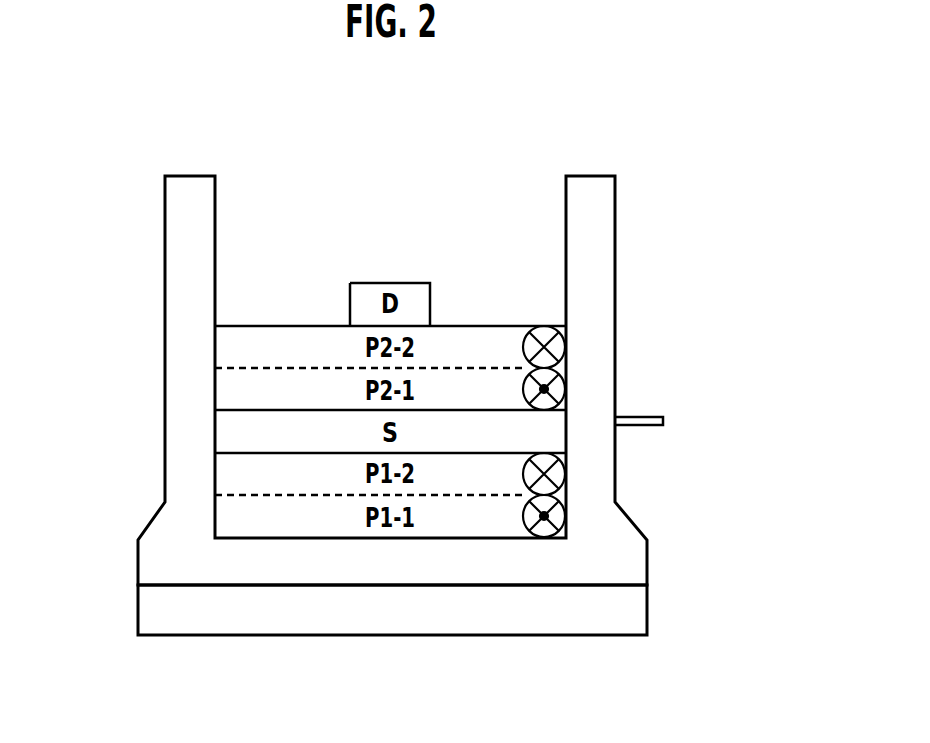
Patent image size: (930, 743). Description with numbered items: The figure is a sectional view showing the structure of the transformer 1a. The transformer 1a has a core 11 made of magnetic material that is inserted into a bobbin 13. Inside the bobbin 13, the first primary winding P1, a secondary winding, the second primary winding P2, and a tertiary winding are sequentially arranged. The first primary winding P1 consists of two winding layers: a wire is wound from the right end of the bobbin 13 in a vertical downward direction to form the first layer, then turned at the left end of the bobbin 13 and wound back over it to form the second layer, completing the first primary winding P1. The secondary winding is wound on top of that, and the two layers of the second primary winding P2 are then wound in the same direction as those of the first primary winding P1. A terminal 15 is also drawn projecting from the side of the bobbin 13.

The transformer 1a is at (486, 162).
The core 11 is at (248, 620).
The bobbin 13 is at (633, 560).
The terminal 15 is at (653, 415).
The first primary winding P1 is at (567, 453).
The second primary winding P2 is at (567, 410).